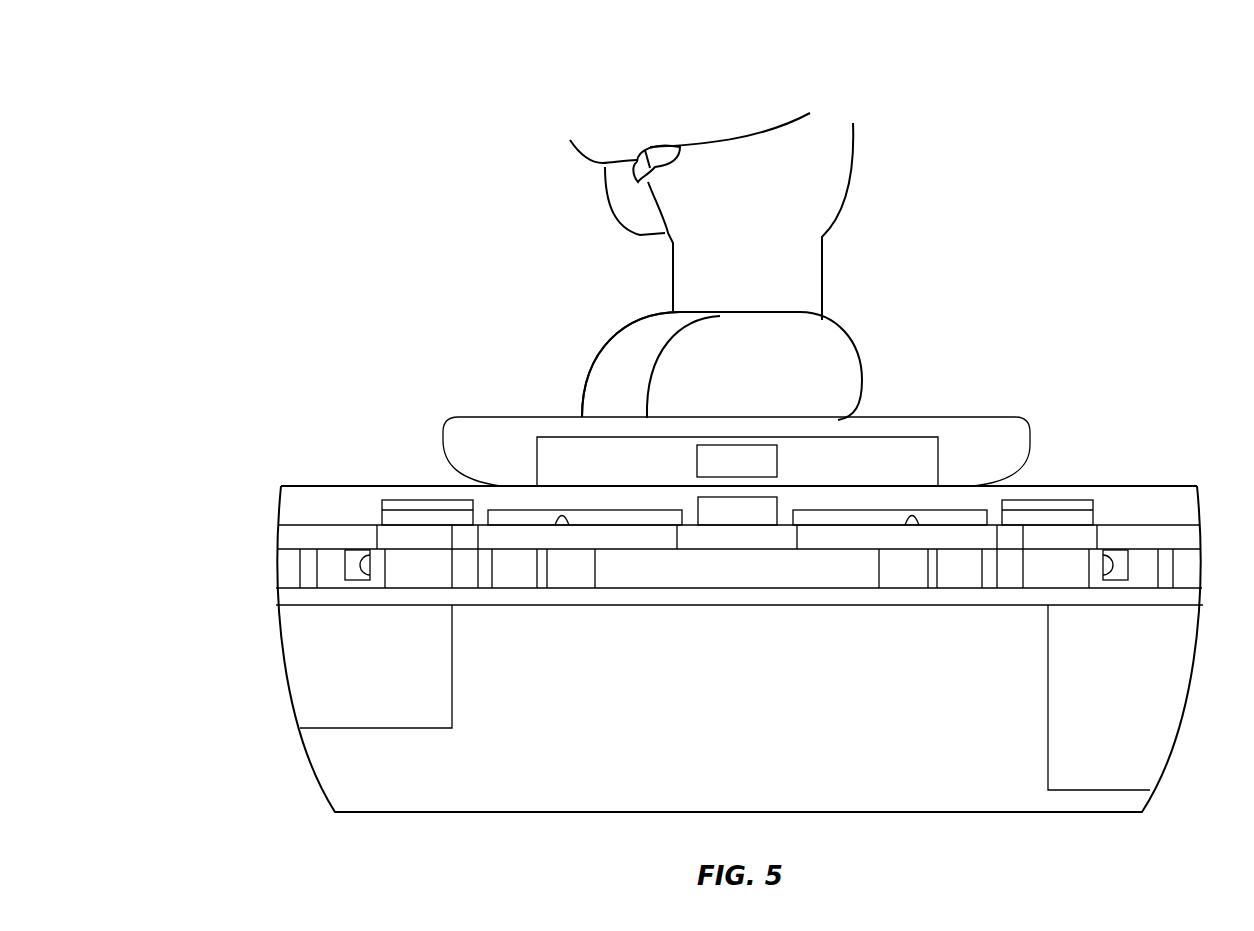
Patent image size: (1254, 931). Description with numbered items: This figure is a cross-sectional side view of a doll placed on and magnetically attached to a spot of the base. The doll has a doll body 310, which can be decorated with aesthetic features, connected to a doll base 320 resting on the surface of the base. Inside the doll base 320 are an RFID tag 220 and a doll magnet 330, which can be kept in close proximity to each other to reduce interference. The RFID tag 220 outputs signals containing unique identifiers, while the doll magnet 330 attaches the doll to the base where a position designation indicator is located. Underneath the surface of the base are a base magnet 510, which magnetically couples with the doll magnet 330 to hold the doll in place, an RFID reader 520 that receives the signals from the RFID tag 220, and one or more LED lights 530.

The RFID tag 220 is at (566, 436).
The doll body 310 is at (645, 356).
The doll base 320 is at (528, 413).
The doll magnet 330 is at (713, 463).
The base magnet 510 is at (788, 504).
The RFID reader 520 is at (905, 556).
The LED light 530 is at (338, 567).